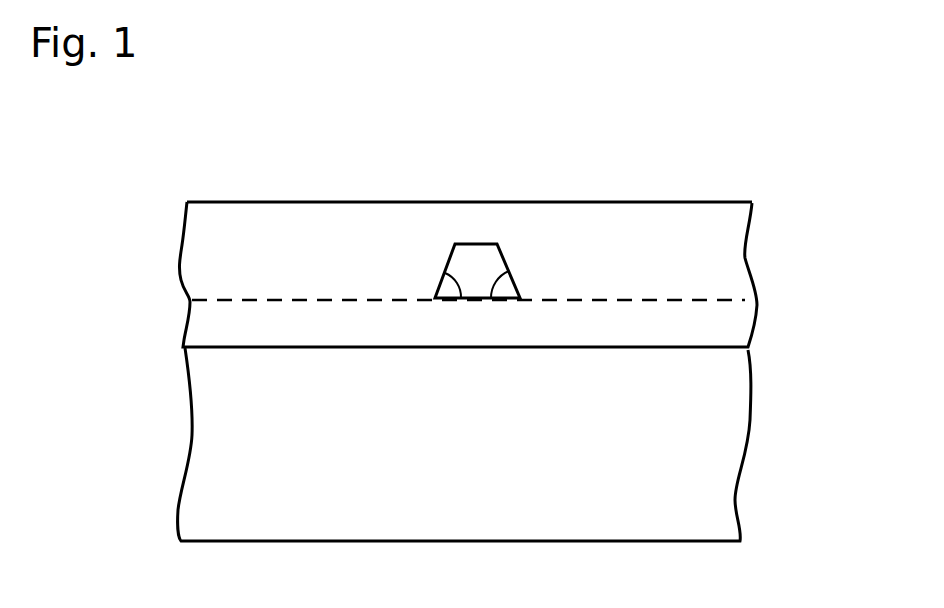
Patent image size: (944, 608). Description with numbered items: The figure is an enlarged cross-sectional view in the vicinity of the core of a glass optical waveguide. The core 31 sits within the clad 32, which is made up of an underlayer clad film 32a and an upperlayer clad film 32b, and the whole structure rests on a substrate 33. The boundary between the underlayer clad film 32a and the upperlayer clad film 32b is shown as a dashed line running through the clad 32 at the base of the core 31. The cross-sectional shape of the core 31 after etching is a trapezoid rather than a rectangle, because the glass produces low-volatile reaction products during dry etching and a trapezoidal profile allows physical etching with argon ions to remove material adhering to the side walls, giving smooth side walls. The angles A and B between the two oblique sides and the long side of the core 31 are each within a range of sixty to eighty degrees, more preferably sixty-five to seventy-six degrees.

The core 31 is at (469, 266).
The clad 32 is at (160, 347).
The underlayer clad film 32a is at (700, 322).
The upperlayer clad film 32b is at (700, 267).
The substrate 33 is at (468, 445).